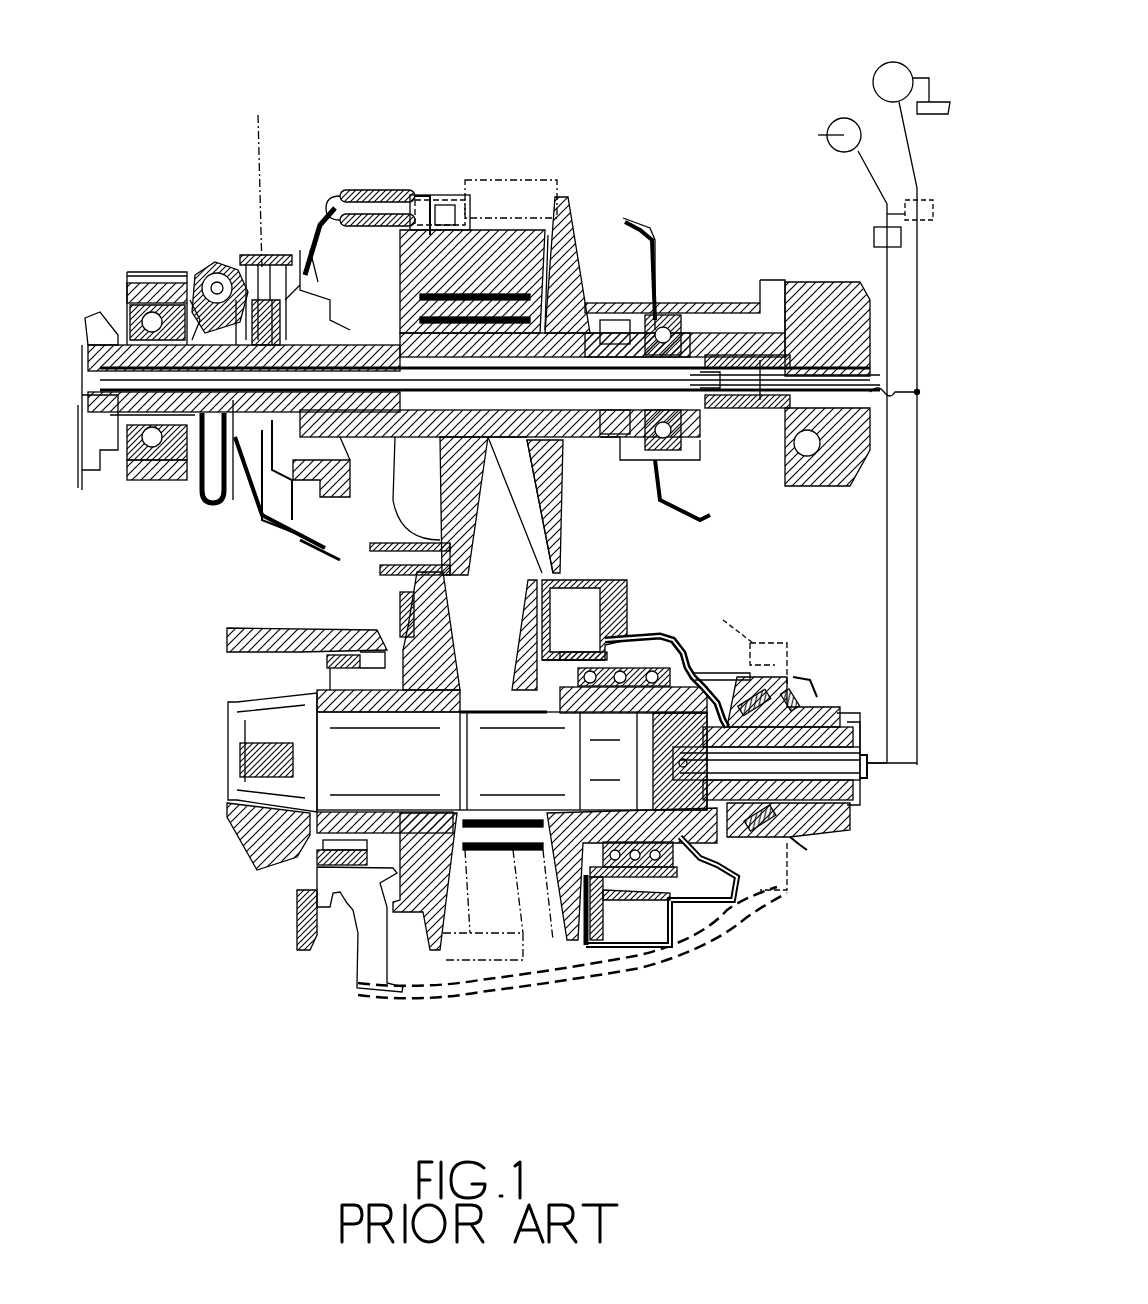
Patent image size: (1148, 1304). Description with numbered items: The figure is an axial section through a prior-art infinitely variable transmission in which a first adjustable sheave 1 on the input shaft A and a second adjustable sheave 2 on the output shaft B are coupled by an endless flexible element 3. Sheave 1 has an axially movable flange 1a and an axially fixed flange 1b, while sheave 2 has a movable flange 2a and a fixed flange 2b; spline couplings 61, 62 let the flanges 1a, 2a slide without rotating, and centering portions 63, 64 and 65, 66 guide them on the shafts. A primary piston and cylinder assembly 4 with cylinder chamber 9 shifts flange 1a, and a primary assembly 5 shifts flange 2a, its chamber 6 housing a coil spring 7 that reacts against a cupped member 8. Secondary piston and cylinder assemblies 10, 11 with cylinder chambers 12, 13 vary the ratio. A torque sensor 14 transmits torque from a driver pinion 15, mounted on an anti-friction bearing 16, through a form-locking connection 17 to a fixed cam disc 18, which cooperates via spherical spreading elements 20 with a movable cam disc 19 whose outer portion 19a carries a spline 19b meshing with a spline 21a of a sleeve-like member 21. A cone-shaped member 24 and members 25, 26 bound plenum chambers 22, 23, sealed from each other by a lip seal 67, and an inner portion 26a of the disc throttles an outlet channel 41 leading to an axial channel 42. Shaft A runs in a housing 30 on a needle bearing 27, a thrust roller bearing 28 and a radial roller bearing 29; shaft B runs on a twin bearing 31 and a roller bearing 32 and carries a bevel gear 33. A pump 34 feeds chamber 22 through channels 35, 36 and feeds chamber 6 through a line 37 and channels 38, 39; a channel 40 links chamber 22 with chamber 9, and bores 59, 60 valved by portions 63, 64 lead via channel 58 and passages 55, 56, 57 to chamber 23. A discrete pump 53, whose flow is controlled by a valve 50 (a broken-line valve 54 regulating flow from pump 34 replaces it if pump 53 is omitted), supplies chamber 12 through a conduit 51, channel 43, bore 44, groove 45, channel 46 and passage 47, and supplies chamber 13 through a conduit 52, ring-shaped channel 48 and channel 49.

The first adjustable sheave 1 is at (494, 563).
The axially movable first flange 1a is at (425, 225).
The axially fixed second flange 1b is at (560, 228).
The second adjustable sheave 2 is at (505, 976).
The axially movable first flange 2a is at (570, 863).
The axially fixed second flange 2b is at (435, 905).
The endless flexible element 3 is at (478, 850).
The primary piston and cylinder assembly 4 is at (332, 545).
The primary piston and cylinder assembly 5 is at (645, 668).
The chamber 6 is at (720, 670).
The coil spring 7 is at (700, 660).
The cupped member 8 is at (690, 922).
The cylinder chamber 9 is at (398, 572).
The secondary piston and cylinder assembly 10 is at (362, 200).
The secondary piston and cylinder assembly 11 is at (633, 577).
The cylinder chamber 12 is at (445, 210).
The cylinder chamber 13 is at (588, 592).
The torque sensor 14 is at (193, 545).
The driver pinion 15 is at (150, 275).
The anti-friction bearing 16 is at (135, 292).
The form-locking connection 17 is at (170, 470).
The rotary cam disc 18 is at (205, 300).
The second cam disc 19 is at (236, 300).
The radially outer portion 19a is at (272, 298).
The spline 19b is at (278, 520).
The spherical spreading elements 20 is at (216, 272).
The sleeve-like member 21 is at (362, 230).
The mating spline 21a is at (292, 298).
The plenum chamber 22 is at (256, 298).
The plenum chamber 23 is at (295, 252).
The cone-shaped member 24 is at (340, 208).
The ring-shaped member 25 is at (246, 258).
The member 26 is at (168, 280).
The inner portion 26a is at (196, 300).
The needle bearing 27 is at (92, 318).
The thrust roller bearing 28 is at (665, 325).
The radial roller bearing 29 is at (615, 328).
The housing 30 is at (650, 320).
The twin anti-friction rolling bearing 31 is at (770, 843).
The anti-friction roller bearing 32 is at (322, 850).
The bevel gear 33 is at (252, 787).
The pump 34 is at (885, 58).
The axially extending channel 35 is at (708, 368).
The radially extending channel 36 is at (213, 506).
The hydraulic fluid line 37 is at (903, 770).
The axially extending channel 38 is at (862, 770).
The radially extending channels 39 is at (718, 885).
The channel 40 is at (260, 180).
The channel 41 is at (135, 432).
The axially extending channel 42 is at (78, 460).
The axially parallel channel 43 is at (622, 438).
The radially extending bore 44 is at (321, 464).
The peripheral groove 45 is at (283, 500).
The channel 46 is at (400, 222).
The radially extending passage 47 is at (316, 280).
The ring-shaped channel 48 is at (817, 843).
The radially extending channel 49 is at (753, 697).
The valve 50 is at (878, 227).
The conduit 51 is at (885, 314).
The conduit 52 is at (885, 543).
The pump 53 is at (841, 118).
The valve 54 is at (905, 205).
The passage 55 is at (341, 535).
The passage 56 is at (264, 478).
The passage 57 is at (462, 300).
The channel 58 is at (576, 320).
The bore 59 is at (482, 318).
The bore 60 is at (550, 240).
The spline coupling 61 is at (402, 440).
The spline coupling 62 is at (528, 678).
The centering portion 63 is at (360, 445).
The centering portion 64 is at (552, 115).
The centering portion 65 is at (600, 708).
The centering portion 66 is at (703, 670).
The lip seal 67 is at (268, 465).
The input shaft A is at (145, 455).
The output shaft B is at (327, 727).